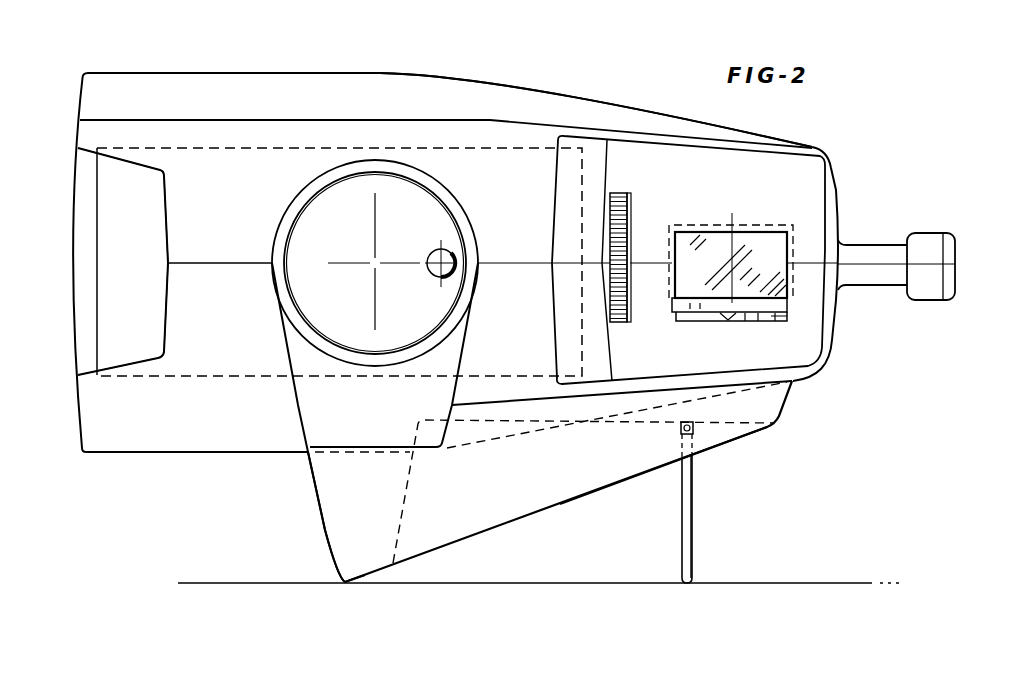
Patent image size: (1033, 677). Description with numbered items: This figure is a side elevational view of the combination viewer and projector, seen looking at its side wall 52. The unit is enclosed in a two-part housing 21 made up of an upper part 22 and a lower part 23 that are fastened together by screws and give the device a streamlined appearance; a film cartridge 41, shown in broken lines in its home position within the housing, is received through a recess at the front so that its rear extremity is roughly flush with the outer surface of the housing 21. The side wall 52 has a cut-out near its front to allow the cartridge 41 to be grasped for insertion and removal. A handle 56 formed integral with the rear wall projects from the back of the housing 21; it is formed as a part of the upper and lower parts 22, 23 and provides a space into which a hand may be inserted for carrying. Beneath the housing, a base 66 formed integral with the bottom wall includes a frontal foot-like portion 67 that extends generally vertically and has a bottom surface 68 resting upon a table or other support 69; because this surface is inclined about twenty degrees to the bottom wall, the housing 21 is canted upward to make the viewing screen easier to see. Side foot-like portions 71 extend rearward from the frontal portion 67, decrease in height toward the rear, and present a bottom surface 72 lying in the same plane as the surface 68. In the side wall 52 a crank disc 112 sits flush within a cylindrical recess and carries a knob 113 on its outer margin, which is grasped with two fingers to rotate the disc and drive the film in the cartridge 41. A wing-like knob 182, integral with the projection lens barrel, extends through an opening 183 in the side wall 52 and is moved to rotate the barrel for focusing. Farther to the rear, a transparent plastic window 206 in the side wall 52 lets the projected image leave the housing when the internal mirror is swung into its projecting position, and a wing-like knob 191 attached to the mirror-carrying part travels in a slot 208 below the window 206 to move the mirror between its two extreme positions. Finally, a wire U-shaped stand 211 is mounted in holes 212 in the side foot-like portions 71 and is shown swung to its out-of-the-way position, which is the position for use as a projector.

The housing 21 is at (806, 141).
The upper part 22 is at (549, 91).
The lower part 23 is at (160, 449).
The film cartridge 41 is at (187, 158).
The side wall 52 is at (295, 125).
The handle 56 is at (943, 213).
The base 66 is at (323, 520).
The frontal foot-like portion 67 is at (314, 475).
The bottom surface 68 is at (380, 571).
The support 69 is at (777, 562).
The side foot-like portions 71 is at (590, 480).
The bottom surface 72 is at (636, 477).
The crank disc 112 is at (435, 207).
The knob 113 is at (452, 258).
The wing-like knob 182 is at (623, 205).
The opening 183 is at (635, 225).
The wing-like knob 191 is at (688, 317).
The transparent window 206 is at (758, 238).
The slot 208 is at (785, 317).
The wire U-shaped stand 211 is at (692, 517).
The holes 212 is at (695, 430).